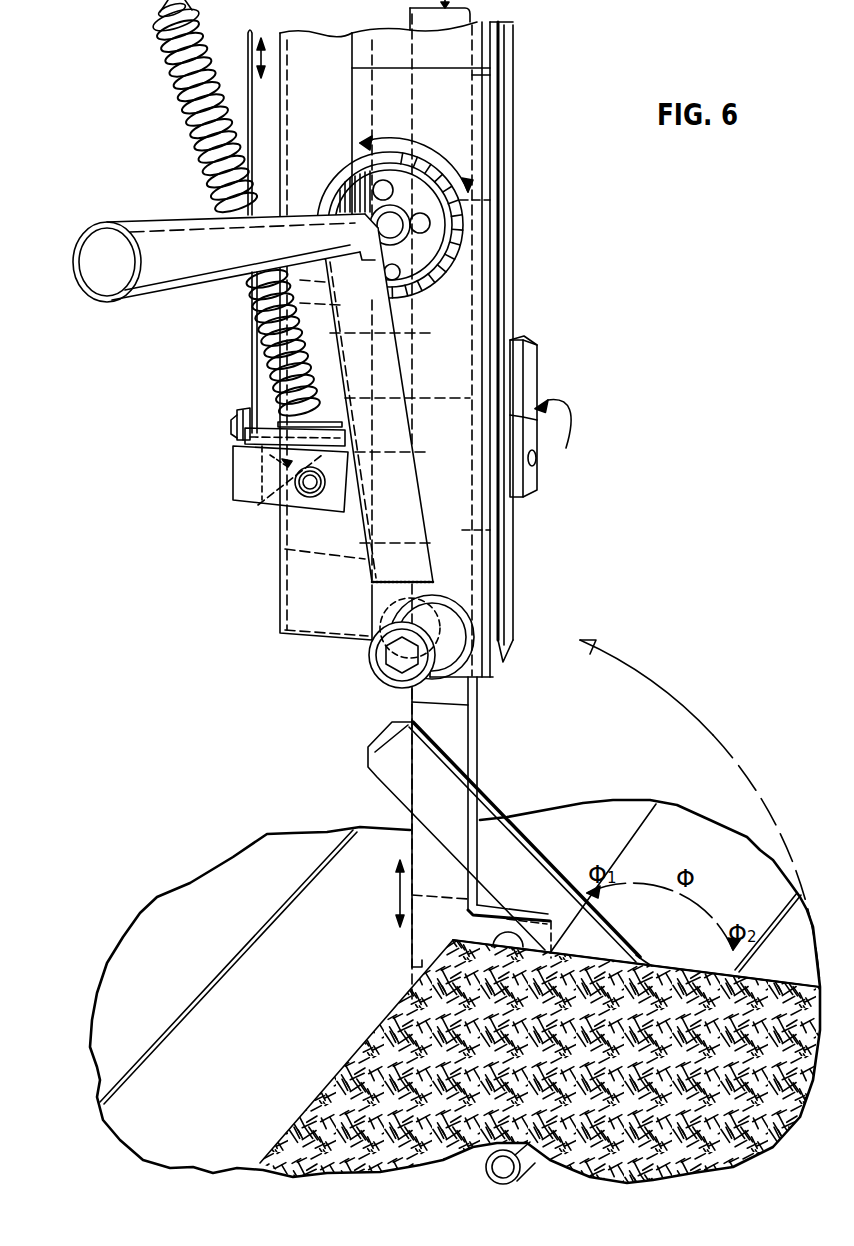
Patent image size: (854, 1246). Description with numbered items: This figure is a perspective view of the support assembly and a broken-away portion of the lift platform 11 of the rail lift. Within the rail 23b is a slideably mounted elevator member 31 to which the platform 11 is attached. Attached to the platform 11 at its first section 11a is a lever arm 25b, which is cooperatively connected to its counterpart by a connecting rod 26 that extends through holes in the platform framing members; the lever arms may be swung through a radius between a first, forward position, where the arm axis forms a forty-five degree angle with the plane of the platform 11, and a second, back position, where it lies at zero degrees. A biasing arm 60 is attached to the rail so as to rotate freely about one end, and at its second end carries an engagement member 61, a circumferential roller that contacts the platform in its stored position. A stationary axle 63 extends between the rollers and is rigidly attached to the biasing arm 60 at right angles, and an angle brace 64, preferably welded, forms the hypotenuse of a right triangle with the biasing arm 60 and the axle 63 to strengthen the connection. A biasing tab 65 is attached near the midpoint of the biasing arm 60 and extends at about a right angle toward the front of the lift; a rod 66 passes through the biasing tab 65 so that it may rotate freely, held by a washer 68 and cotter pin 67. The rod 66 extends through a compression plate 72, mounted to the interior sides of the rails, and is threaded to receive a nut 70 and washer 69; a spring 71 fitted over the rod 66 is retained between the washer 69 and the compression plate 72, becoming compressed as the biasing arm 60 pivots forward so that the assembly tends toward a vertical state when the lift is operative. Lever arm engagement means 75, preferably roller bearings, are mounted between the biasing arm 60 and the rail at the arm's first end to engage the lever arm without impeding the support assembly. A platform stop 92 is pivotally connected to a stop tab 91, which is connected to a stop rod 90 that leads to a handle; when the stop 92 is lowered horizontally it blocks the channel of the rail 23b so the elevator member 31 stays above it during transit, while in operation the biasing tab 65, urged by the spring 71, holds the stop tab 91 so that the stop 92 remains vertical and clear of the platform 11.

The lift platform 11 is at (333, 1113).
The first section 11a is at (410, 1010).
The rail 23b is at (510, 84).
The lever arm 25b is at (496, 812).
The connecting rod 26 is at (648, 962).
The elevator member 31 is at (468, 728).
The biasing arm 60 is at (400, 598).
The engagement member 61 is at (424, 280).
The stationary axle 63 is at (148, 224).
The angle brace 64 is at (400, 450).
The biasing tab 65 is at (232, 462).
The rod 66 is at (265, 500).
The cotter pin 67 is at (310, 492).
The washer 68 is at (325, 493).
The washer 69 is at (158, 27).
The nut 70 is at (158, 9).
The spring 71 is at (178, 65).
The compression plate 72 is at (288, 415).
The lever arm engagement means 75 is at (450, 617).
The stop rod 90 is at (246, 66).
The stop tab 91 is at (237, 413).
The platform stop 92 is at (530, 380).